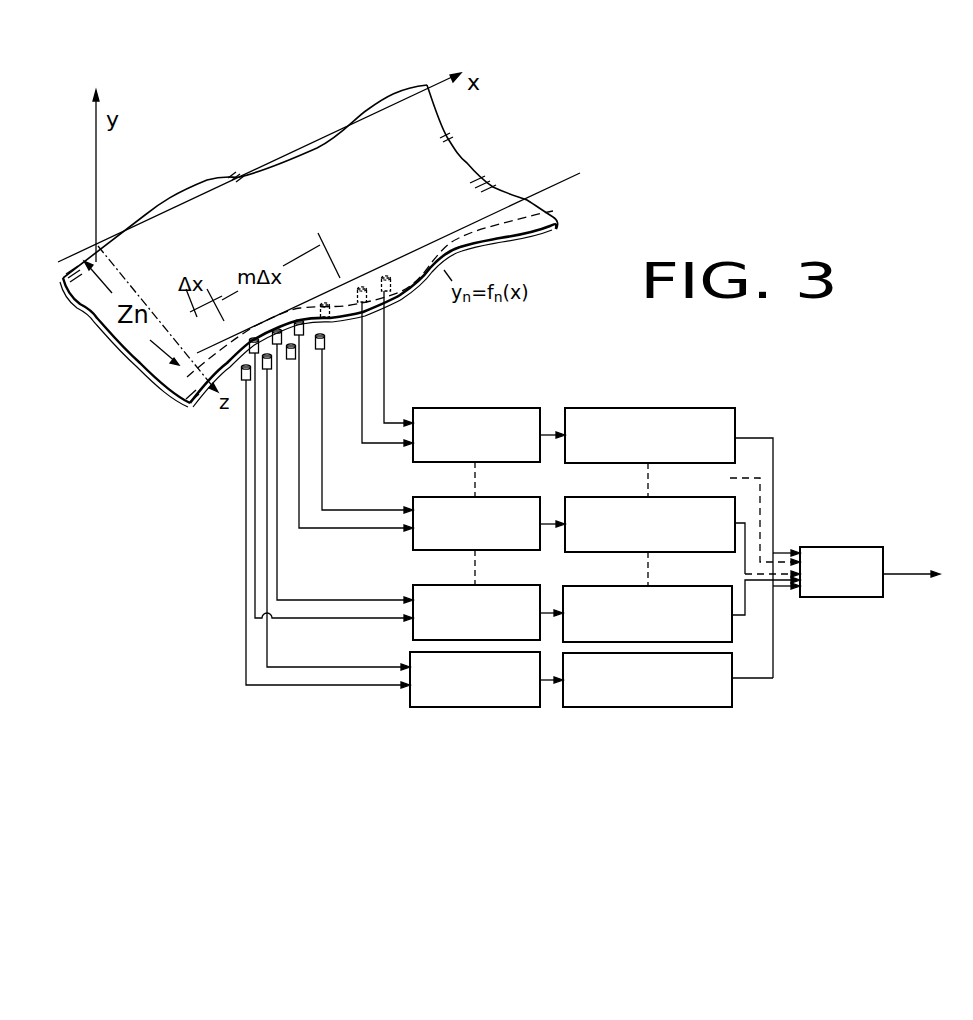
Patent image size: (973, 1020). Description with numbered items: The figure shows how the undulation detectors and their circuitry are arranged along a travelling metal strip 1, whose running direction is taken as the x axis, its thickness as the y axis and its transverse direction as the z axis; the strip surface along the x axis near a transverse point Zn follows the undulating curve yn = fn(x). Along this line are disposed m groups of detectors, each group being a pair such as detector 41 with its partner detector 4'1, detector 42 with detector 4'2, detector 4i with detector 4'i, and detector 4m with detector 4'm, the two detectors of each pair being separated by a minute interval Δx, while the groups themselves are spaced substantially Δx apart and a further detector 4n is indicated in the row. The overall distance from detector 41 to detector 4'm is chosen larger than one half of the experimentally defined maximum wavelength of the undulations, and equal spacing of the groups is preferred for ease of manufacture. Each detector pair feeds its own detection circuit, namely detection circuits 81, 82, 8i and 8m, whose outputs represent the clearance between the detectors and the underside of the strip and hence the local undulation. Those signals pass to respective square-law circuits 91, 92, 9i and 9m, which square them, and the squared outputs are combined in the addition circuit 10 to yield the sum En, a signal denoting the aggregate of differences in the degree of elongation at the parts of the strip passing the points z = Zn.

The metal strip 1 is at (156, 372).
The detector 41 is at (246, 383).
The detector 42 is at (255, 339).
The detector 4i is at (295, 360).
The detector 4m is at (362, 288).
The detector 4n is at (328, 340).
The detector 4'1 is at (337, 512).
The detector 4'2 is at (343, 444).
The detector 4'i is at (335, 320).
The detector 4'm is at (398, 326).
The detection circuit 81 is at (420, 663).
The detection circuit 82 is at (531, 587).
The detection circuit 8i is at (527, 498).
The detection circuit 8m is at (525, 402).
The square-law circuit 91 is at (732, 667).
The square-law circuit 92 is at (730, 587).
The square-law circuit 9i is at (728, 498).
The square-law circuit 9m is at (723, 402).
The addition circuit 10 is at (875, 548).